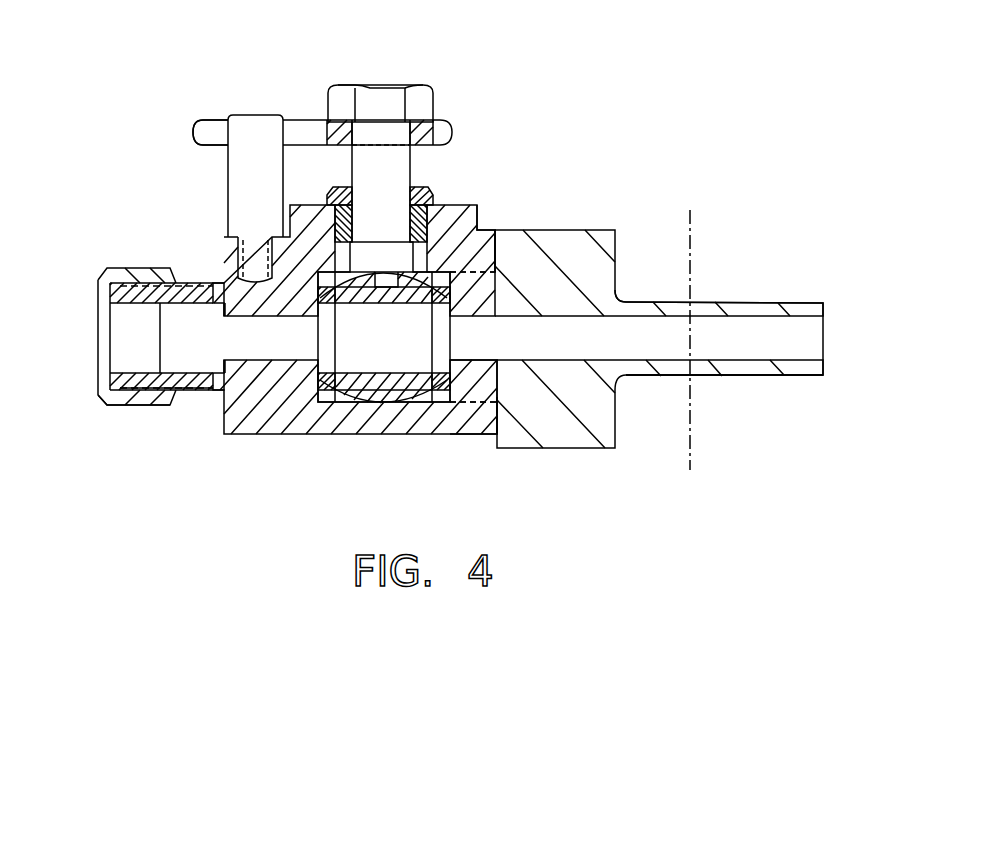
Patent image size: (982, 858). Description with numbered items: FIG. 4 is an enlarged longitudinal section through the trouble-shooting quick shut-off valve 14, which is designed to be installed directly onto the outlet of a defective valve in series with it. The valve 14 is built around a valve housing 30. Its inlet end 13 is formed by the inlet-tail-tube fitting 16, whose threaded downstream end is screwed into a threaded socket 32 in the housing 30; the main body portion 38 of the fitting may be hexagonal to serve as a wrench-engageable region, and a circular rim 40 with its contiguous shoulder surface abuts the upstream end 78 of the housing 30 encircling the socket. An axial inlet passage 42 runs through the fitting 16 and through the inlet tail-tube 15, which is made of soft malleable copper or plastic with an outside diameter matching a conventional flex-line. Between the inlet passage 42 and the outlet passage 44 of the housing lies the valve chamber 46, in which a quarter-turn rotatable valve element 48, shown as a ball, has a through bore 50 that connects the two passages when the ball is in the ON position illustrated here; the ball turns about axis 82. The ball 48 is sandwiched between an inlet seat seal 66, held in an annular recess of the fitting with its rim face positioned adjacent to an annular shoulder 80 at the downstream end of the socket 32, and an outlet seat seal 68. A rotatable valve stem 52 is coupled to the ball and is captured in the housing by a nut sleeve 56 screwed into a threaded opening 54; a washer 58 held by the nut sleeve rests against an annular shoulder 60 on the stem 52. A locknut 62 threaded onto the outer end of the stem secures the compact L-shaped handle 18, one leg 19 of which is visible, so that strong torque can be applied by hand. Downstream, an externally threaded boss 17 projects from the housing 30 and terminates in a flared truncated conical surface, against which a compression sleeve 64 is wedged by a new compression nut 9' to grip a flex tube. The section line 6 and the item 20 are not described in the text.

The section line 6- 6 is at (710, 223).
The compression nut 9' is at (99, 403).
The inlet end 13 is at (623, 298).
The quick shut-off valve 14 is at (246, 438).
The inlet tail-tube 15 is at (800, 305).
The inlet-tail-tube fitting 16 is at (709, 383).
The externally threaded boss 17 is at (196, 280).
The handle 18 is at (297, 109).
The handle leg 19 is at (208, 128).
The handle stop 20 is at (214, 192).
The valve housing 30 is at (342, 404).
The threaded socket 32 is at (497, 398).
The main body portion 38 is at (597, 230).
The circular rim 40 is at (497, 232).
The inlet passage 42 is at (592, 368).
The outlet passage 44 is at (262, 352).
The valve chamber 46 is at (345, 398).
The rotatable valve element 48 is at (412, 416).
The through bore 50 is at (366, 370).
The valve stem 52 is at (422, 151).
The threaded opening 54 is at (358, 198).
The nut sleeve 56 is at (447, 187).
The washer 58 is at (445, 233).
The annular shoulder 60 is at (358, 258).
The locknut 62 is at (348, 72).
The compression sleeve 64 is at (130, 395).
The inlet seat seal 66 is at (445, 403).
The outlet seat seal 68 is at (314, 404).
The upstream end 78 is at (500, 255).
The annular shoulder 80 is at (448, 285).
The axis 82 is at (388, 112).